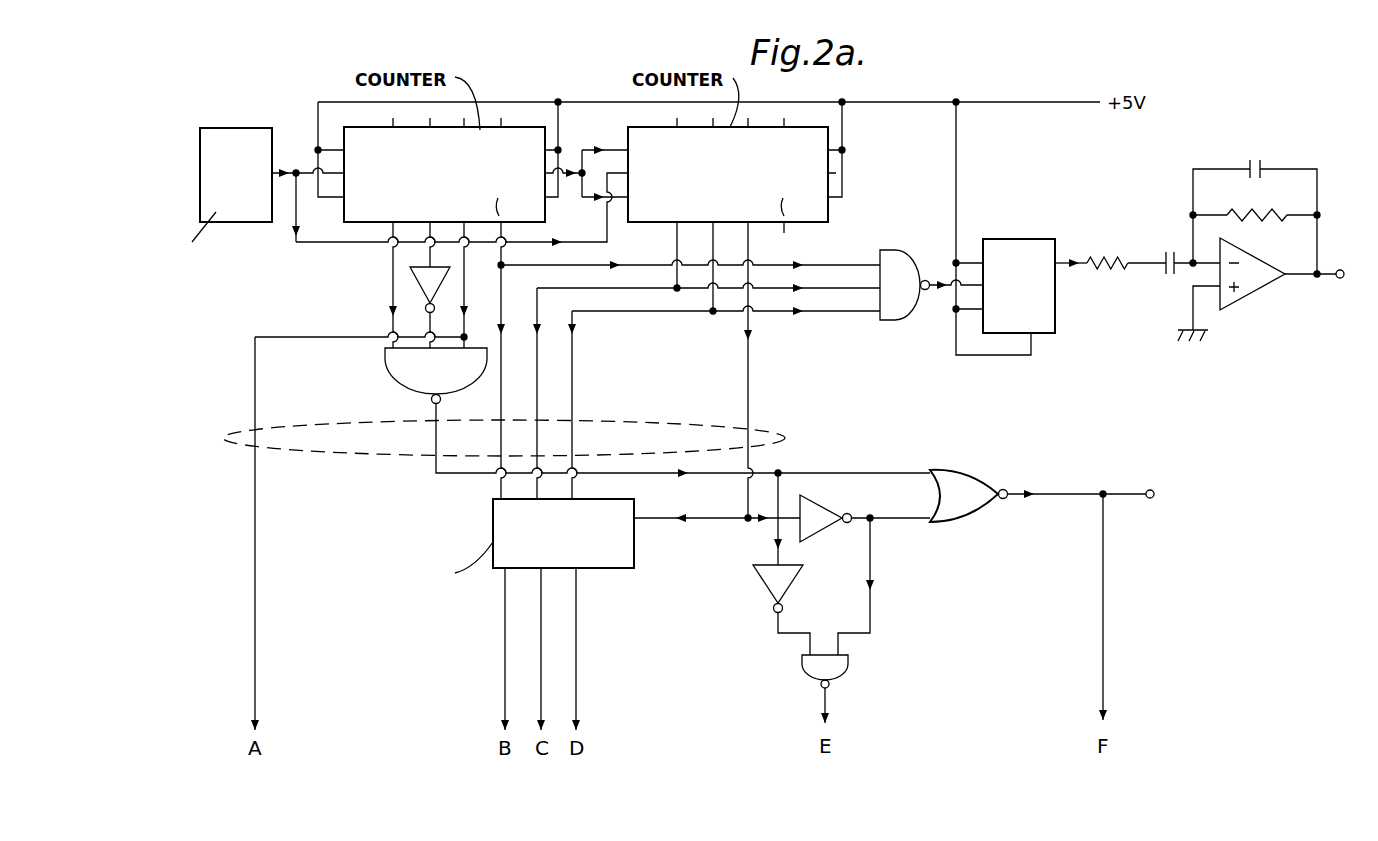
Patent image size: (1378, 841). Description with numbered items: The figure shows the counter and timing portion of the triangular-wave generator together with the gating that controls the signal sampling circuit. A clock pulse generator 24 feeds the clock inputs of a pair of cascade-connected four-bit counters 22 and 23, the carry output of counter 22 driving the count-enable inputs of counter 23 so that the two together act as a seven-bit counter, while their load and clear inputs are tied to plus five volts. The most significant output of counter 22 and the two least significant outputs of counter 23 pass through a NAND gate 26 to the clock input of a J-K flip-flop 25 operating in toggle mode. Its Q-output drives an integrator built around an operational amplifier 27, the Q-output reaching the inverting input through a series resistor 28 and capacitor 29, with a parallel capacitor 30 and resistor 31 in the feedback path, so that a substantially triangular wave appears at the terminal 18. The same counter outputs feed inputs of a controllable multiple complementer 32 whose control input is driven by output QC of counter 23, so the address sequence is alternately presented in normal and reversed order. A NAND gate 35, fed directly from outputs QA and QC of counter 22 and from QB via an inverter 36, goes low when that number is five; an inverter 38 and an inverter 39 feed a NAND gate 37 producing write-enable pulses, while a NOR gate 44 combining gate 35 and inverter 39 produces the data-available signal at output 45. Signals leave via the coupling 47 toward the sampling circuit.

The terminal 18 is at (1340, 268).
The 4-bit counter 22 is at (450, 186).
The 4-bit counter 23 is at (734, 186).
The clock pulse generator 24 is at (237, 189).
The J-K flip-flop 25 is at (1050, 303).
The NAND gate 26 is at (906, 266).
The operational amplifier 27 is at (1261, 285).
The resistor 28 is at (1101, 256).
The capacitor 29 is at (1166, 270).
The capacitor 30 is at (1250, 164).
The resistor 31 is at (1241, 211).
The controllable multiple complementer 32 is at (493, 532).
The NAND gate 35 is at (408, 372).
The inverter 36 is at (418, 287).
The NAND gate 37 is at (806, 668).
The inverter 38 is at (766, 584).
The inverter 39 is at (822, 507).
The NOR gate 44 is at (963, 470).
The output 45 is at (1148, 490).
The coupling 47 is at (232, 426).